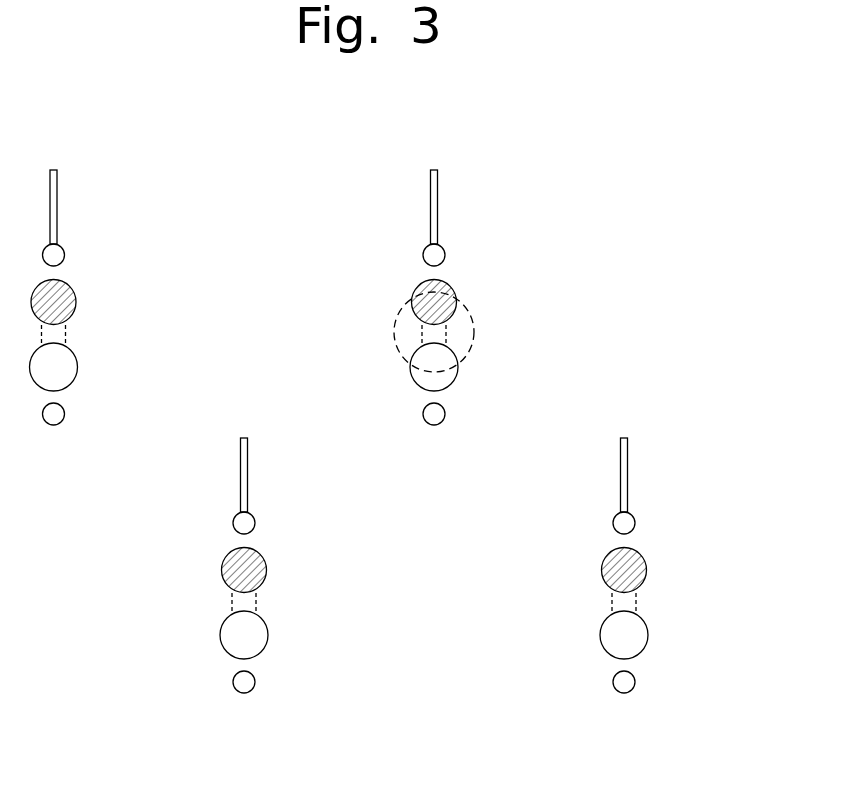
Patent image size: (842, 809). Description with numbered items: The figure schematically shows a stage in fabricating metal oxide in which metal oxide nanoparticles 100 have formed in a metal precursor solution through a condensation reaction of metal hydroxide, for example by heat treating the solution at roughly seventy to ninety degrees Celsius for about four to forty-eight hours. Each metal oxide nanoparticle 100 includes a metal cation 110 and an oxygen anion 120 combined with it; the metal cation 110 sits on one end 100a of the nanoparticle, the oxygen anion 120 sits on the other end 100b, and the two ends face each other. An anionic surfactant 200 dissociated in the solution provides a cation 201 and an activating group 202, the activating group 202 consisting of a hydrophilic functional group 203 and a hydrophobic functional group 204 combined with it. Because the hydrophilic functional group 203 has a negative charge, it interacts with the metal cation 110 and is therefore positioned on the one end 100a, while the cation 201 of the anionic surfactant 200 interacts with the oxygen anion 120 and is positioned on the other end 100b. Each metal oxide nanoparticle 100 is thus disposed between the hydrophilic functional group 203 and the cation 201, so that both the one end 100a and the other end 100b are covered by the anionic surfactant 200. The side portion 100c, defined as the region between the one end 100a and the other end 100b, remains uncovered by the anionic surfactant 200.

The metal oxide nanoparticle 100 is at (699, 602).
The one end 100a is at (676, 558).
The other end 100b is at (675, 646).
The side portion 100c is at (473, 325).
The metal cation 110 is at (646, 568).
The oxygen anion 120 is at (668, 635).
The anionic surfactant 200 is at (606, 567).
The cation 201 is at (554, 682).
The activating group 202 is at (554, 487).
The hydrophilic functional group 203 is at (613, 524).
The hydrophobic functional group 204 is at (622, 478).